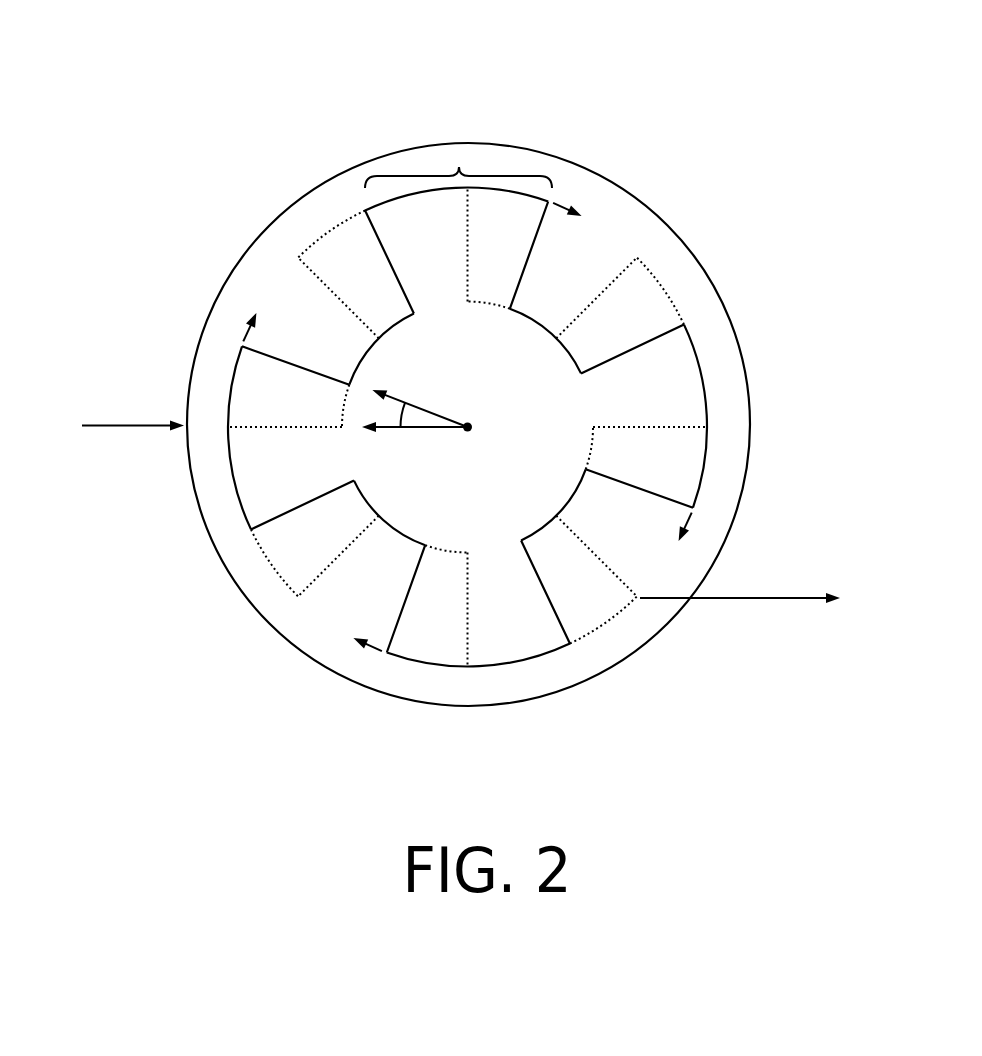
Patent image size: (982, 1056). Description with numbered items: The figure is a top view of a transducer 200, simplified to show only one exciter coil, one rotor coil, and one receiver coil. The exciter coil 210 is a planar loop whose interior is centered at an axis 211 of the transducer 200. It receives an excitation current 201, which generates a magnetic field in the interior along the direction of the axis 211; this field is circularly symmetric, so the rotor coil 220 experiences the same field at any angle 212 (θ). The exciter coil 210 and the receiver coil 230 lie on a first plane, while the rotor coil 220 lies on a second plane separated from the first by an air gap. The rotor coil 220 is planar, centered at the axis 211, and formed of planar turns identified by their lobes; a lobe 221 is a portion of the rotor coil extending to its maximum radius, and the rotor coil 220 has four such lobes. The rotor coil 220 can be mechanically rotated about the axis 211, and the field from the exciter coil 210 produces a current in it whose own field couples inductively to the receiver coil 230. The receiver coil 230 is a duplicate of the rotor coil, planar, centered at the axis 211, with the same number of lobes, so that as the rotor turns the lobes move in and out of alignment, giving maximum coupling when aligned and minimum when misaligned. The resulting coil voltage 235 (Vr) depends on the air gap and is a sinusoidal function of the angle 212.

The transducer 200 is at (265, 75).
The excitation current 201 is at (138, 425).
The exciter coil 210 is at (510, 143).
The axis 211 is at (473, 427).
The angle 212 is at (424, 407).
The rotor coil 220 is at (535, 240).
The lobe 221 is at (459, 167).
The receiver coil 230 is at (577, 313).
The coil voltage 235 is at (767, 597).